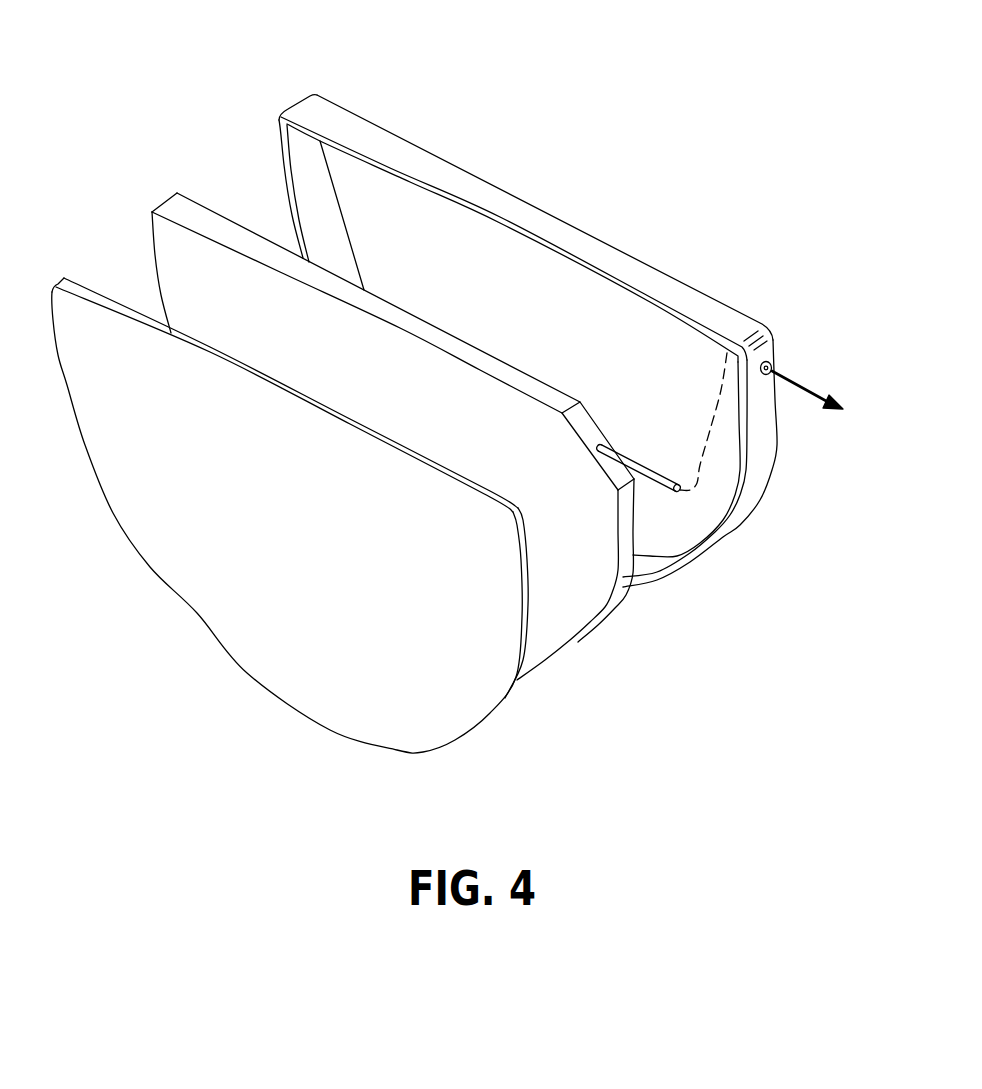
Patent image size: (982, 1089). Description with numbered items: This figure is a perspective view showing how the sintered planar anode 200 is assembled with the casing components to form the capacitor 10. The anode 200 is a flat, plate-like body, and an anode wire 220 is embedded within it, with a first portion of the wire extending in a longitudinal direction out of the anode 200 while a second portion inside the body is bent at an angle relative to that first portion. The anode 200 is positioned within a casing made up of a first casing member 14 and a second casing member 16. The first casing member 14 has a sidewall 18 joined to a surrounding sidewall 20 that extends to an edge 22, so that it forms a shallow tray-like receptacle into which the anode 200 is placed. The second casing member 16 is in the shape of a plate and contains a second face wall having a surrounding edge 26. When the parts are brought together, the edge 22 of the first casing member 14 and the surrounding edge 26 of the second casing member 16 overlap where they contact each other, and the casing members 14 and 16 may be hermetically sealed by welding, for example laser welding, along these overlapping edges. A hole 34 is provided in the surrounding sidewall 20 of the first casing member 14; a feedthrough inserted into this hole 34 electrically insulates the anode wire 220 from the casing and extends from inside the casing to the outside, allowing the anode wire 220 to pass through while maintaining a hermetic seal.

The capacitor 10 is at (583, 90).
The first casing member 14 is at (579, 348).
The second casing member 16 is at (270, 653).
The sidewall 18 is at (403, 198).
The surrounding sidewall 20 is at (550, 227).
The edge 22 is at (493, 232).
The surrounding edge 26 is at (307, 407).
The hole 34 is at (770, 357).
The anode 200 is at (565, 626).
The anode wire 220 is at (655, 478).